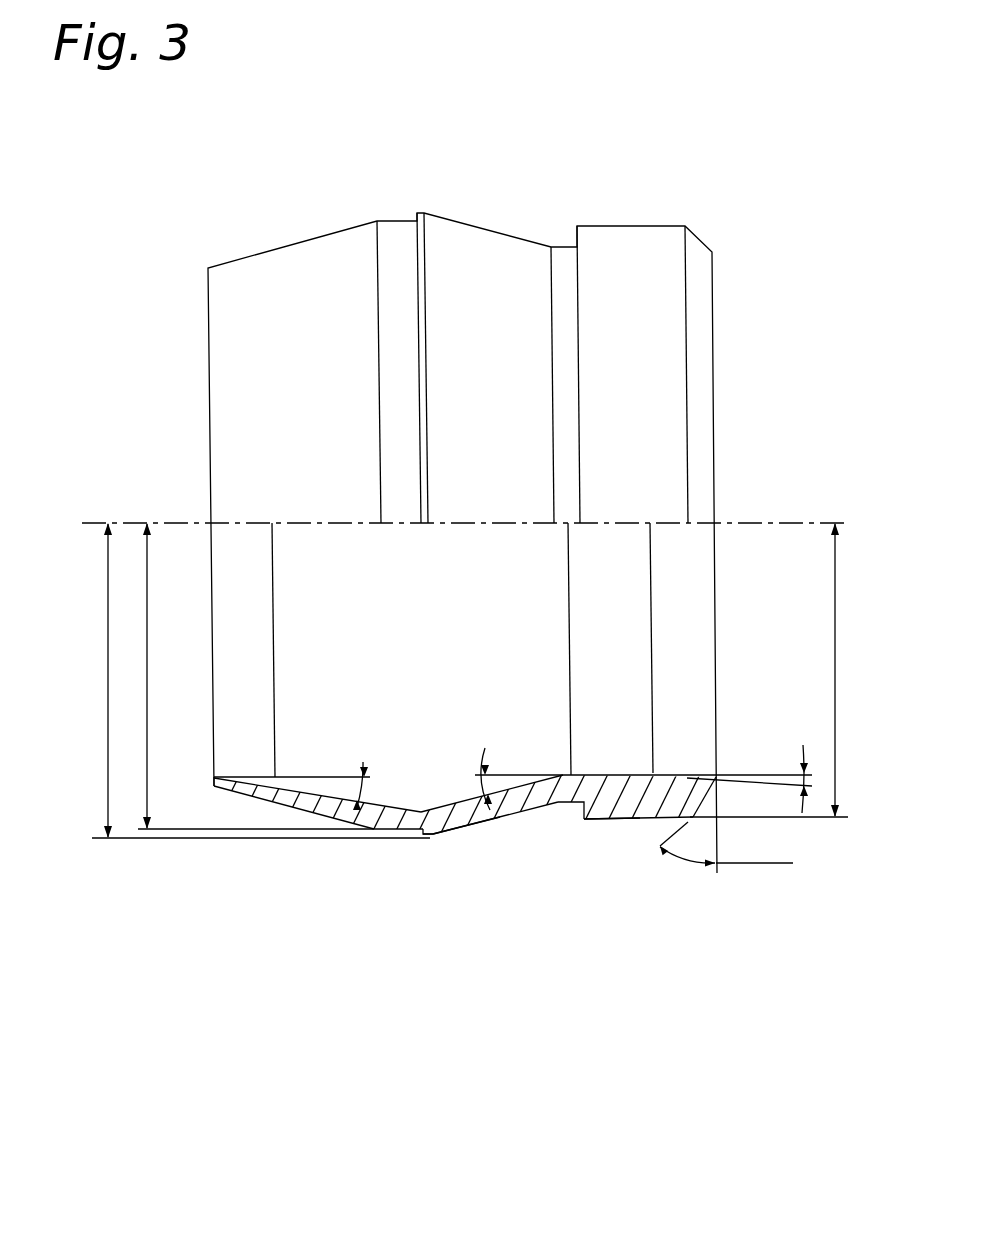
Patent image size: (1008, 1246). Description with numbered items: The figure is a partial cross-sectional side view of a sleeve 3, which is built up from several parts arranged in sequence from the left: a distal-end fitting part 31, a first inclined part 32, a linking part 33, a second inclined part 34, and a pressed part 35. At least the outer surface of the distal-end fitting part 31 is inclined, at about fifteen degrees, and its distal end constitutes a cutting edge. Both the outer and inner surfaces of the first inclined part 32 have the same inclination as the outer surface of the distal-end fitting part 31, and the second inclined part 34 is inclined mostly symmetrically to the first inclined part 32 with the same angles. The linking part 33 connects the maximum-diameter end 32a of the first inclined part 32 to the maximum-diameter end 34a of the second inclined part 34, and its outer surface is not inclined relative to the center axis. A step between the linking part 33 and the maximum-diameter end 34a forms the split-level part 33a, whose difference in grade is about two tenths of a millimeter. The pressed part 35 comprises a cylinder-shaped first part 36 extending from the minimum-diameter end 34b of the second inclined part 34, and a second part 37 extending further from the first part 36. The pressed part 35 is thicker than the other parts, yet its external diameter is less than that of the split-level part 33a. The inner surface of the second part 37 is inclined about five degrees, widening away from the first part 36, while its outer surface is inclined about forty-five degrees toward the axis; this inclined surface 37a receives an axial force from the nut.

The sleeve 3 is at (323, 202).
The distal-end fitting part 31 is at (240, 788).
The first inclined part 32 is at (307, 803).
The maximum-diameter end of the first inclined part 32a is at (392, 832).
The linking part 33 is at (404, 832).
The split-level part 33a is at (423, 841).
The second inclined part 34 is at (510, 812).
The maximum-diameter end of the second inclined part 34a is at (443, 840).
The minimum-diameter end of the second inclined part 34b is at (573, 790).
The pressed part 35 is at (708, 915).
The first part 36 is at (620, 795).
The second part 37 is at (663, 797).
The inclined surface 37a is at (700, 806).